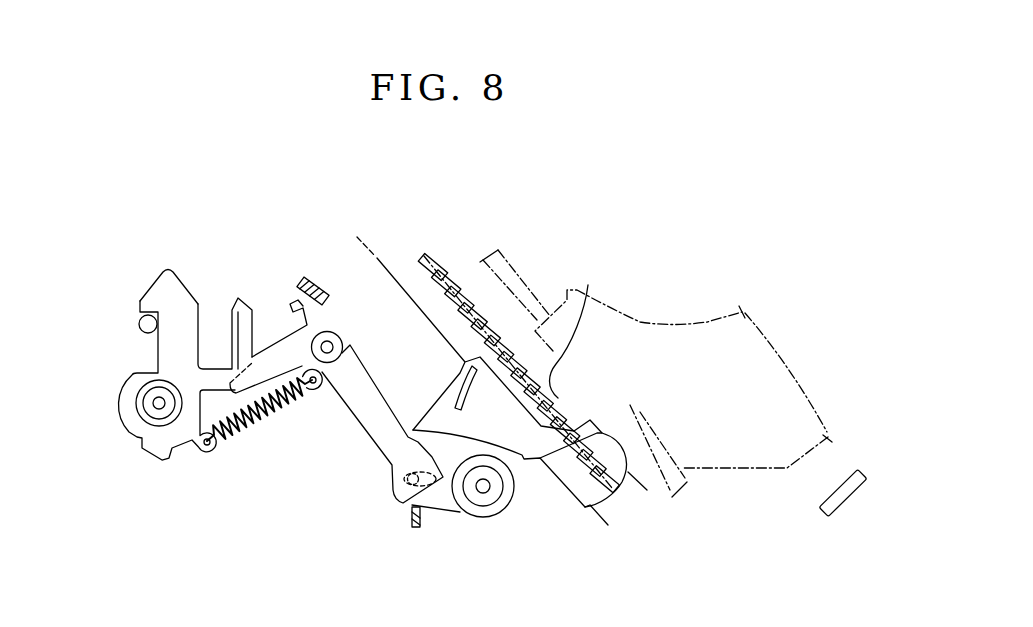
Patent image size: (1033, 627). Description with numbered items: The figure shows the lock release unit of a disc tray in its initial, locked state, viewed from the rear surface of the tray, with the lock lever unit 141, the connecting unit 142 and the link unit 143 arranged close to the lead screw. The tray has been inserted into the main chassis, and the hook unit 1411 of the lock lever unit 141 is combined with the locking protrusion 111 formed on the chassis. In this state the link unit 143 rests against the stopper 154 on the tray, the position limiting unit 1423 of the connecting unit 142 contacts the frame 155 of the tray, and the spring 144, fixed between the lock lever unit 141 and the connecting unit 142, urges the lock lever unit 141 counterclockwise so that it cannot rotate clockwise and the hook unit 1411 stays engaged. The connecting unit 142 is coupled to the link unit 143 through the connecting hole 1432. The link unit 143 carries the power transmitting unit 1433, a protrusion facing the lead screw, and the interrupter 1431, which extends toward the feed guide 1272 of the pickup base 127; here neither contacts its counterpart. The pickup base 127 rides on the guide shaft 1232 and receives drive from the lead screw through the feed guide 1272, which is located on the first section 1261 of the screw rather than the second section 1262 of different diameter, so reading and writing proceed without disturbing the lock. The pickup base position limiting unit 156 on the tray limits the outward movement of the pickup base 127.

The locking protrusion 111 is at (139, 324).
The pickup base 127 is at (655, 330).
The guide shaft 1232 is at (512, 272).
The first section 1261 is at (443, 248).
The second section 1262 is at (584, 510).
The feed guide 1272 is at (588, 285).
The lock lever unit 141 is at (124, 432).
The hook unit 1411 is at (170, 280).
The connecting unit 142 is at (352, 430).
The position limiting unit 1423 is at (294, 301).
The link unit 143 is at (498, 516).
The interrupter 1431 is at (630, 480).
The connecting hole 1432 is at (445, 490).
The power transmitting unit 1433 is at (459, 402).
The spring 144 is at (267, 420).
The stopper 154 is at (417, 527).
The frame 155 is at (306, 280).
The pickup base position limiting unit 156 is at (828, 510).